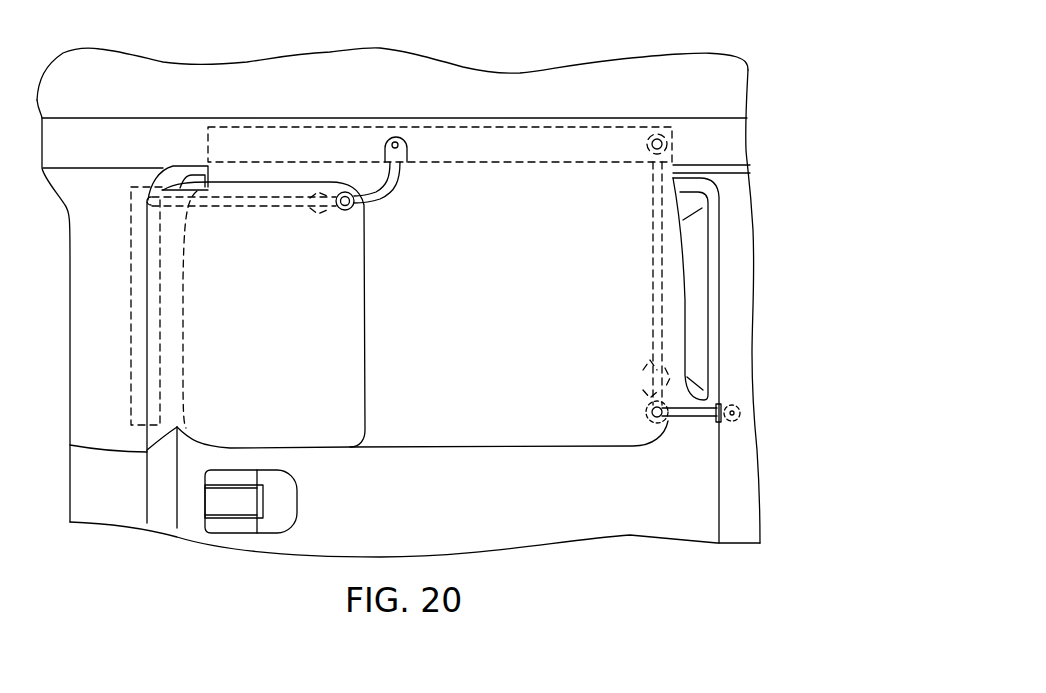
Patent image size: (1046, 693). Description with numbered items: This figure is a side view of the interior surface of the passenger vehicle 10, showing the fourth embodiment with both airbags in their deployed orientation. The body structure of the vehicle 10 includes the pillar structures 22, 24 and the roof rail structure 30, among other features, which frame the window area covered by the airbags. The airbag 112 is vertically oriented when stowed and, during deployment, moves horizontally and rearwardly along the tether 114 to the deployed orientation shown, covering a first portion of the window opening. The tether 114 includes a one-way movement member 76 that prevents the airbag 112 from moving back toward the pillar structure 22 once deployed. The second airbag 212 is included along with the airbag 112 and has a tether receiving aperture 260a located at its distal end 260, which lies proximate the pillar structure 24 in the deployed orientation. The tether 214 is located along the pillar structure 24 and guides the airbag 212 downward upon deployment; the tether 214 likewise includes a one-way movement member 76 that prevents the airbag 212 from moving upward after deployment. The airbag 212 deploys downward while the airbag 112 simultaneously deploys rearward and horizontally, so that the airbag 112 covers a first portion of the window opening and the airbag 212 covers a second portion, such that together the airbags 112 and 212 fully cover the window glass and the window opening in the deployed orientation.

The vehicle 10 is at (658, 36).
The pillar structure 22 is at (100, 341).
The pillar structure 24 is at (737, 462).
The roof rail structure 30 is at (703, 143).
The one-way movement member 76 is at (320, 214).
The airbag 112 is at (122, 271).
The tether 114 is at (367, 203).
The airbag 212 is at (559, 124).
The tether 214 is at (670, 298).
The distal end 260 is at (653, 433).
The tether receiving aperture 260a is at (650, 412).